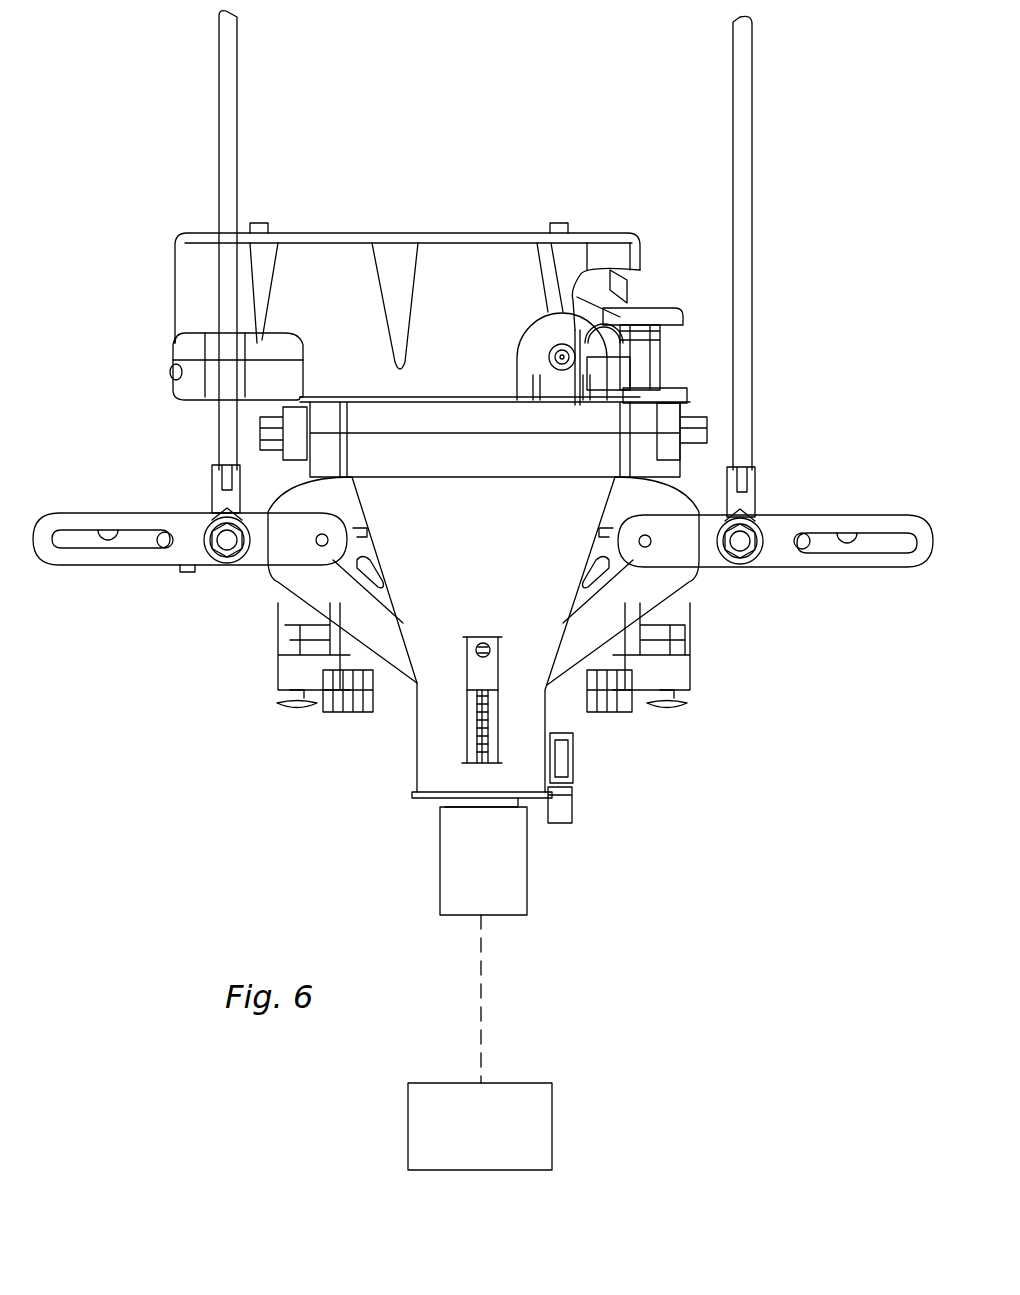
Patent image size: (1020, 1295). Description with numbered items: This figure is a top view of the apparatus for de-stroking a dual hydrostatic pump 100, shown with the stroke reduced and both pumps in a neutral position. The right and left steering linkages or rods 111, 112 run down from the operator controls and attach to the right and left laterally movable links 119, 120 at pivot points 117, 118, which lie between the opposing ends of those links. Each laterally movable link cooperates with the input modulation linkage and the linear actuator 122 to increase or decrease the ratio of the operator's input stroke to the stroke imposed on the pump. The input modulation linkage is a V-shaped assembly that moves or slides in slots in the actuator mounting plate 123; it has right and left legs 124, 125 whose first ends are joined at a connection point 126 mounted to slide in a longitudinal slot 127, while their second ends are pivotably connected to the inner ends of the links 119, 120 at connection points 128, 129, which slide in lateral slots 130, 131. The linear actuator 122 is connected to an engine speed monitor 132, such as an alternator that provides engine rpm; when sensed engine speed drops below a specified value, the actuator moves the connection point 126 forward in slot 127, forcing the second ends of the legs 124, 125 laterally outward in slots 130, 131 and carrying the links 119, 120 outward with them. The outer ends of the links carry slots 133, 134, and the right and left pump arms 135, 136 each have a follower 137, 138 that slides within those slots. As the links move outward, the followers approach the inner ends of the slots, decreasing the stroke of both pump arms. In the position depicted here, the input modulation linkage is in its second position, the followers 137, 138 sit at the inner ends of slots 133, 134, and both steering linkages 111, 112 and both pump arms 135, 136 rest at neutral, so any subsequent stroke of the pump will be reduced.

The dual hydrostatic pump 100 is at (641, 766).
The right steering linkage 111 is at (745, 157).
The left steering linkage 112 is at (232, 112).
The pivot point 117 is at (743, 537).
The pivot point 118 is at (213, 538).
The right laterally movable link 119 is at (778, 564).
The left laterally movable link 120 is at (80, 562).
The linear actuator 122 is at (522, 860).
The actuator mounting plate 123 is at (510, 535).
The right leg 124 is at (607, 547).
The left leg 125 is at (360, 552).
The connection point 126 is at (490, 670).
The longitudinal slot 127 is at (467, 720).
The connection point 128 is at (653, 542).
The connection point 129 is at (280, 580).
The lateral slot 130 is at (602, 535).
The lateral slot 131 is at (377, 530).
The engine speed monitor 132 is at (552, 1123).
The slot 133 is at (847, 535).
The slot 134 is at (106, 530).
The right pump arm 135 is at (817, 537).
The left pump arm 136 is at (111, 584).
The follower 137 is at (803, 550).
The follower 138 is at (173, 552).